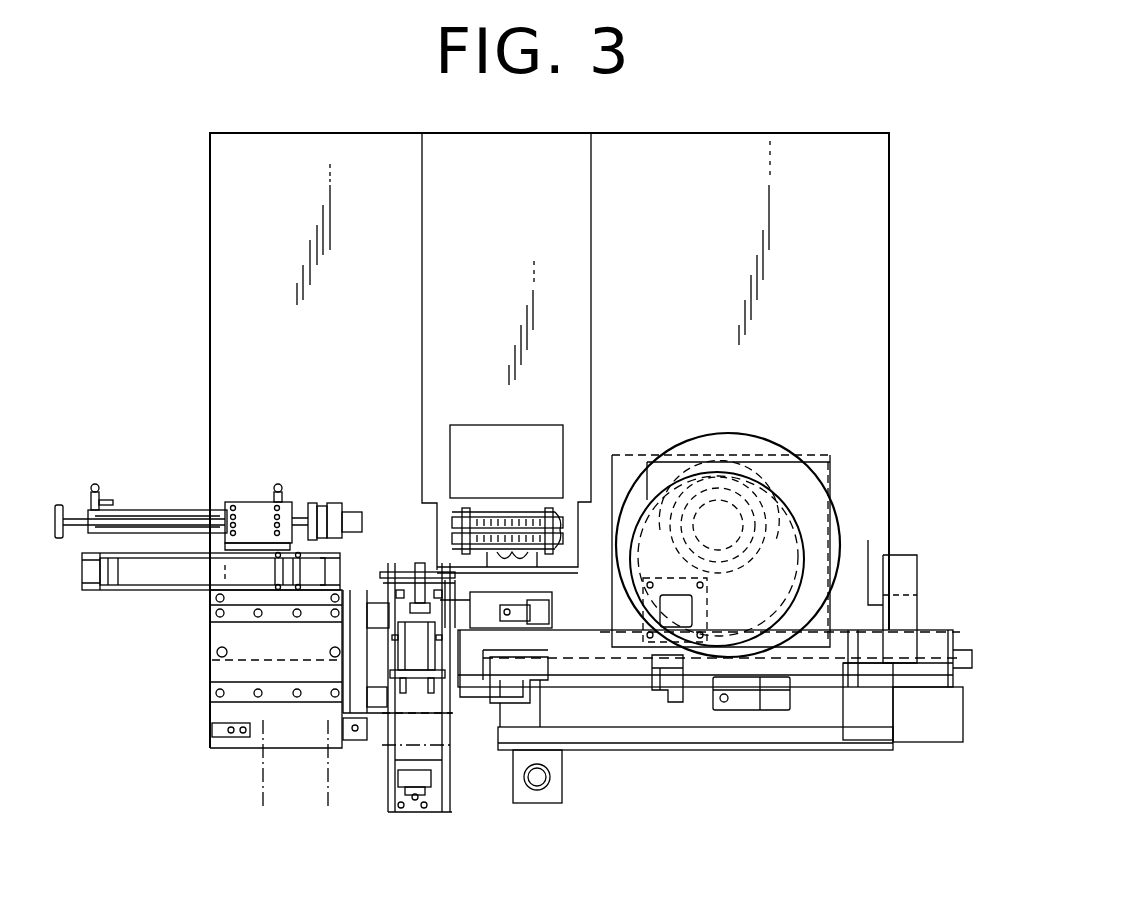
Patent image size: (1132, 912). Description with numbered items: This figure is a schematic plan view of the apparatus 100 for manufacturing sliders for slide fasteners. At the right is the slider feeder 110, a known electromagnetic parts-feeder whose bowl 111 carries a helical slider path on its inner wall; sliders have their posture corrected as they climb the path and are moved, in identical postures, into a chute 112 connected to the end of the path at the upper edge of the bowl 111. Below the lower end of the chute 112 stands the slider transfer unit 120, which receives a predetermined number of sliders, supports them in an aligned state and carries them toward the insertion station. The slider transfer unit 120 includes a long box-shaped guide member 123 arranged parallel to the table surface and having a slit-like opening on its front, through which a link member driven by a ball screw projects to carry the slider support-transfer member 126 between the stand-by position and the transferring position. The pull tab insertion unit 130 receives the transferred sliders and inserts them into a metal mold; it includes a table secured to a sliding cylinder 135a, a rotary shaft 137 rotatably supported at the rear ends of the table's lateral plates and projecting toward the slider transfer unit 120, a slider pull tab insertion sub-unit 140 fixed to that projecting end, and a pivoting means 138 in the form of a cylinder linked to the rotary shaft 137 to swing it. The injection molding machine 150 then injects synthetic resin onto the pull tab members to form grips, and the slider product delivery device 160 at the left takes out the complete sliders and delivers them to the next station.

The apparatus for manufacturing sliders 100 is at (975, 602).
The slider feeder 110 is at (843, 512).
The bowl 111 is at (785, 560).
The chute 112 is at (662, 702).
The slider transfer unit 120 is at (751, 861).
The guide member 123 is at (605, 665).
The slider support-transfer member 126 is at (776, 710).
The pull tab insertion unit 130 is at (432, 518).
The sliding cylinder 135a is at (433, 762).
The rotary shaft 137 is at (405, 572).
The pivoting means 138 is at (410, 655).
The slider pull tab insertion sub-unit 140 is at (523, 522).
The injection molding machine 150 is at (531, 468).
The slider product delivery device 160 is at (300, 487).